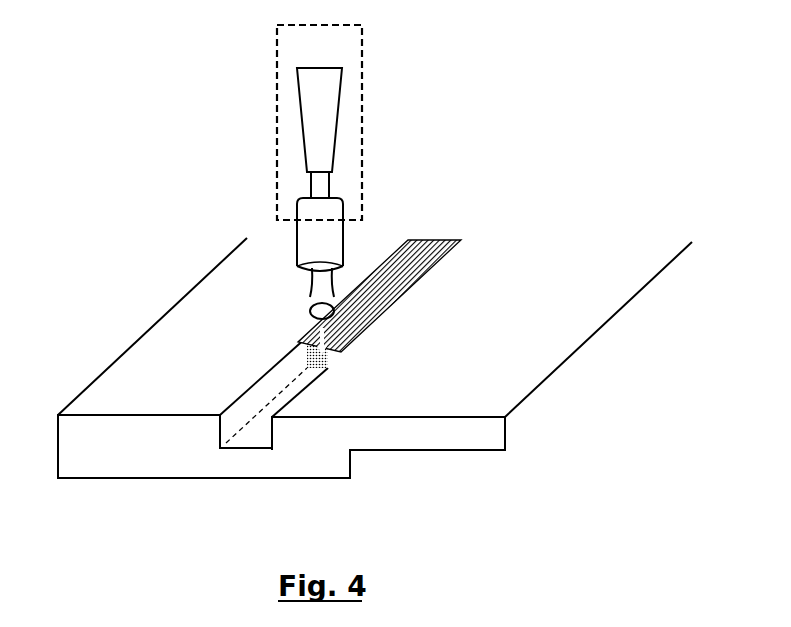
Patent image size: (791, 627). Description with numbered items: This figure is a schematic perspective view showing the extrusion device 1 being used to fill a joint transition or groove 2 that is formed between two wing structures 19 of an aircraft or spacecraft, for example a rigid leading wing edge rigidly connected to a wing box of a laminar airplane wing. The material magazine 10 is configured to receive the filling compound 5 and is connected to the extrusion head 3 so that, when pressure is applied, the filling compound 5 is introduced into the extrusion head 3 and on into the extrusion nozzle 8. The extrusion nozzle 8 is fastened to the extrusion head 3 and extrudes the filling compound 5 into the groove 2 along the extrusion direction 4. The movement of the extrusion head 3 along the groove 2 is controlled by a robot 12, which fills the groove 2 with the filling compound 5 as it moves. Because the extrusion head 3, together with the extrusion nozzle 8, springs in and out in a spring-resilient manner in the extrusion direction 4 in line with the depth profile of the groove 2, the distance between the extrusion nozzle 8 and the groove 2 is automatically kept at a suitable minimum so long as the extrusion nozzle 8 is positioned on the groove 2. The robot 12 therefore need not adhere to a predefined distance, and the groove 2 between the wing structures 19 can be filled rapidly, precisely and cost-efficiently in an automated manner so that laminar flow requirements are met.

The extrusion device 1 is at (375, 103).
The groove 2 is at (254, 432).
The extrusion head 3 is at (311, 248).
The extrusion direction 4 is at (352, 345).
The filling compound 5 is at (427, 240).
The extrusion nozzle 8 is at (318, 313).
The material magazine 10 is at (313, 95).
The robot 12 is at (277, 67).
The wing structures 19 is at (118, 375).